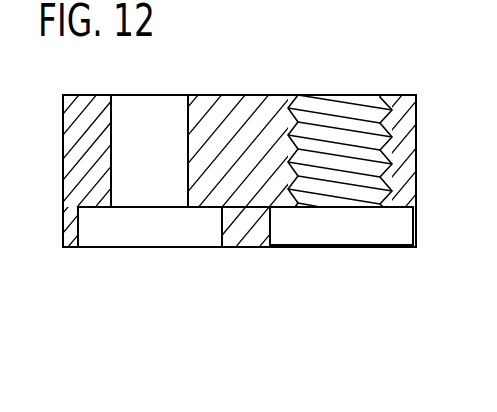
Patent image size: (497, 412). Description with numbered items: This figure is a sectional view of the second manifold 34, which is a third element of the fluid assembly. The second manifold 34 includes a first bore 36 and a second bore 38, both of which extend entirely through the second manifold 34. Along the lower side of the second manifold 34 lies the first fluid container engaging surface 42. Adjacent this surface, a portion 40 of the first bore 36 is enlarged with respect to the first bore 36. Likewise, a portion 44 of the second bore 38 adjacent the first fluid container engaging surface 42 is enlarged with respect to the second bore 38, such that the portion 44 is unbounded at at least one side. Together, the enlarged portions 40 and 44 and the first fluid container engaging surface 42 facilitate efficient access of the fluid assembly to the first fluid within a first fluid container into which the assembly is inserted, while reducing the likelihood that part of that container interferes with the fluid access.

The second manifold 34 is at (60, 208).
The first bore 36 is at (113, 119).
The second bore 38 is at (300, 133).
The portion of the first bore 40 is at (78, 230).
The first fluid container engaging surface 42 is at (237, 248).
The portion of the second bore 44 is at (381, 231).